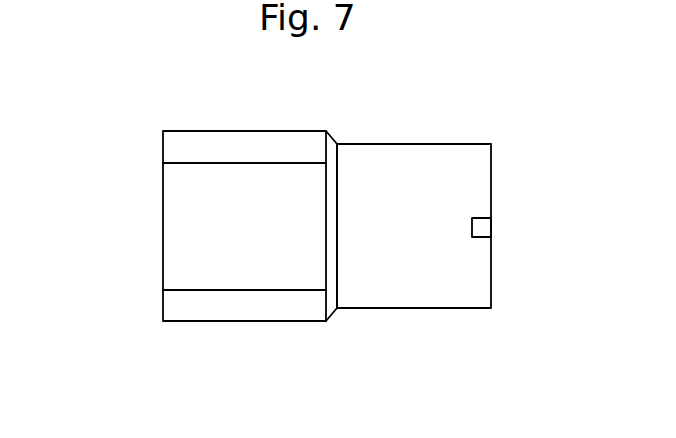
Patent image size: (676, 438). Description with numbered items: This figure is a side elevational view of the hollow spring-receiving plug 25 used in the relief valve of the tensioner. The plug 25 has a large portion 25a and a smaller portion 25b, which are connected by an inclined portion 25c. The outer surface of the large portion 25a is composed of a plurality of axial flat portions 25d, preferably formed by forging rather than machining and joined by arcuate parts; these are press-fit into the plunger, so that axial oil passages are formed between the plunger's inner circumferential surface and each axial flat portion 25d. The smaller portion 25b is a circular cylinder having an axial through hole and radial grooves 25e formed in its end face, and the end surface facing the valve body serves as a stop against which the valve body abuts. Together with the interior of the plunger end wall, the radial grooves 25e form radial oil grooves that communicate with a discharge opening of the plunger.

The spring-receiving plug 25 is at (366, 114).
The large portion 25a is at (278, 310).
The smaller portion 25b is at (420, 308).
The inclined portion 25c is at (332, 319).
The axial flat portions 25d is at (197, 130).
The radial grooves 25e is at (490, 227).